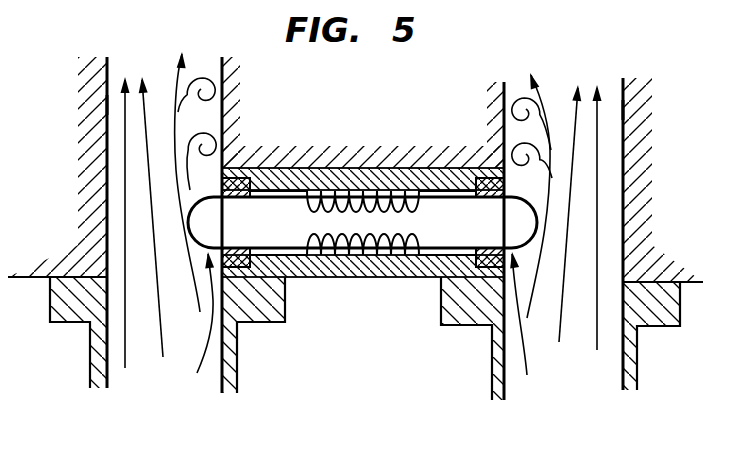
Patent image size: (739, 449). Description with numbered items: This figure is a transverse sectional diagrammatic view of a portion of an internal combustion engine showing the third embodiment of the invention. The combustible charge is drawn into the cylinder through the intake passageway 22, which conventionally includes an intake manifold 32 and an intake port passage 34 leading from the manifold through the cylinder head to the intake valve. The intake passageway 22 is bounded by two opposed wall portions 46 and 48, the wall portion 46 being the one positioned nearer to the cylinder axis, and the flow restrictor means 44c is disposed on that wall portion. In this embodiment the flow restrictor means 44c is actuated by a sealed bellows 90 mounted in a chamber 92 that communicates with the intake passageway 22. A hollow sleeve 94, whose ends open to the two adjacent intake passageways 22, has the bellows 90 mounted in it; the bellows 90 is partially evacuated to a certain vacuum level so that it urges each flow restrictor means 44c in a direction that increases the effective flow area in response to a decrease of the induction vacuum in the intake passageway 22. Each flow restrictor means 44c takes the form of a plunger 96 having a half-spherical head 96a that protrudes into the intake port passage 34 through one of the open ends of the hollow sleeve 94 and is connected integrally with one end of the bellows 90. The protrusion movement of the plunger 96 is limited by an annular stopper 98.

The intake passageway 22 is at (660, 371).
The intake manifold 32 is at (78, 314).
The intake port passage 34 is at (133, 157).
The flow restrictor means 44c is at (359, 327).
The wall portion 46 is at (224, 104).
The wall portion 48 is at (107, 105).
The bellows 90 is at (343, 257).
The chamber 92 is at (343, 193).
The hollow sleeve 94 is at (416, 278).
The plunger 96 is at (291, 235).
The half-spherical head 96a is at (246, 180).
The annular stopper 98 is at (250, 190).